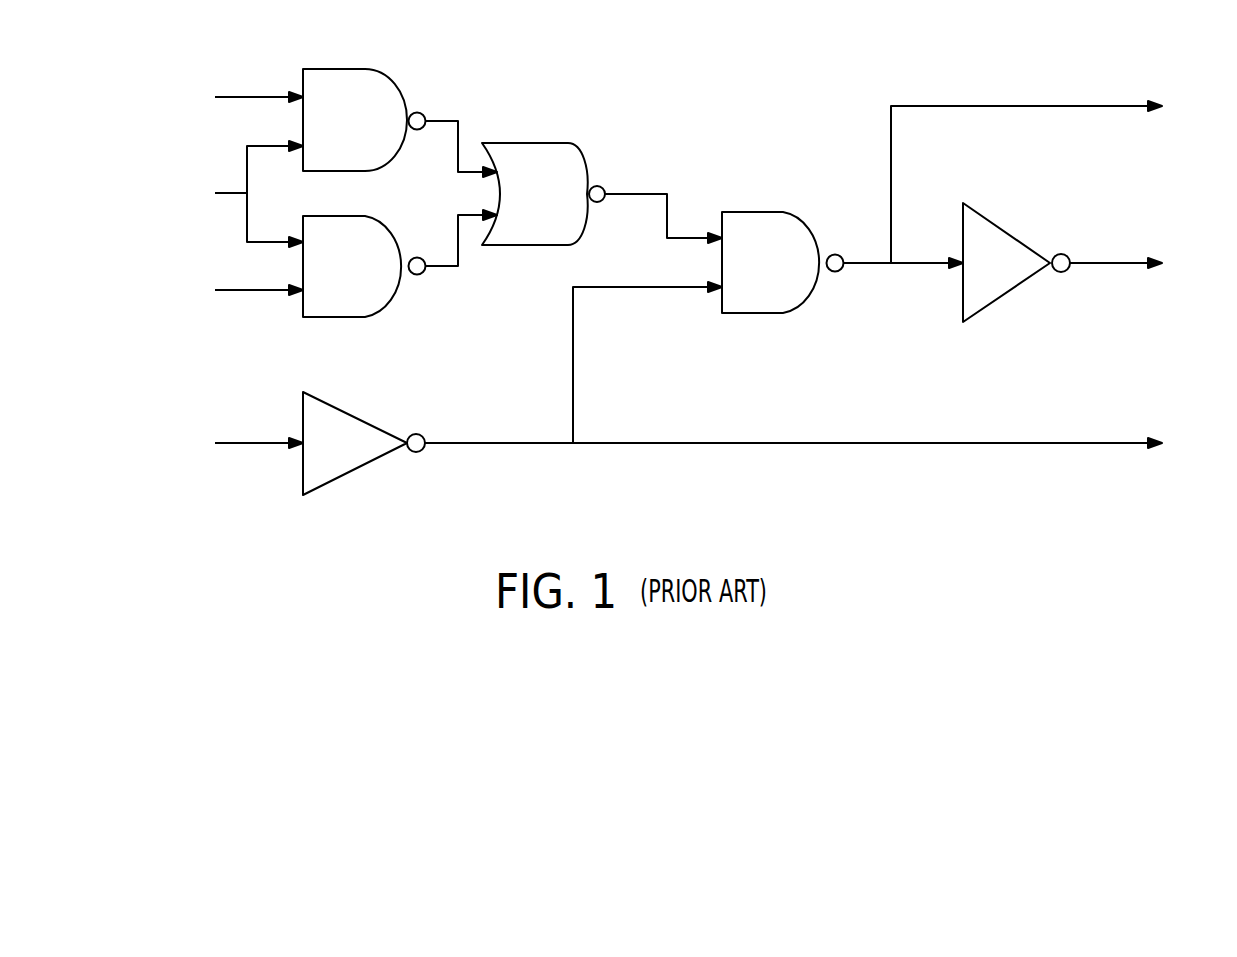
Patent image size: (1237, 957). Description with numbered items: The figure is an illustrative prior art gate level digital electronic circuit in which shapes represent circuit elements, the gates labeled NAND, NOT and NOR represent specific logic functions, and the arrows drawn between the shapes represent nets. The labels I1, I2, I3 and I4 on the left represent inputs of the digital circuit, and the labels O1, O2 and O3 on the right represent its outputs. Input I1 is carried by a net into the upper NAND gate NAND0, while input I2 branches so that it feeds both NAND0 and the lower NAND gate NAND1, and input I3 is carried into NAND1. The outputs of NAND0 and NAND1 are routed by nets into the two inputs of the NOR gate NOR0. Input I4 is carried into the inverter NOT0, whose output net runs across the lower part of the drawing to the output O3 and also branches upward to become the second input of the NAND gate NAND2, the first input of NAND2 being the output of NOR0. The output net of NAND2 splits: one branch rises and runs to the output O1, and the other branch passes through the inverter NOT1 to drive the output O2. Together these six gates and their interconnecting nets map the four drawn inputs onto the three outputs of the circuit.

The input I1 is at (245, 97).
The input I2 is at (245, 194).
The input I3 is at (245, 290).
The input I4 is at (245, 443).
The NAND gate NAND0 is at (400, 123).
The NAND gate NAND1 is at (400, 263).
The NAND gate NAND2 is at (842, 262).
The NOR gate NOR0 is at (602, 194).
The NOT gate NOT0 is at (726, 388).
The NOT gate NOT1 is at (1016, 262).
The output O1 is at (1048, 177).
The output O2 is at (1137, 263).
The output O3 is at (1152, 442).